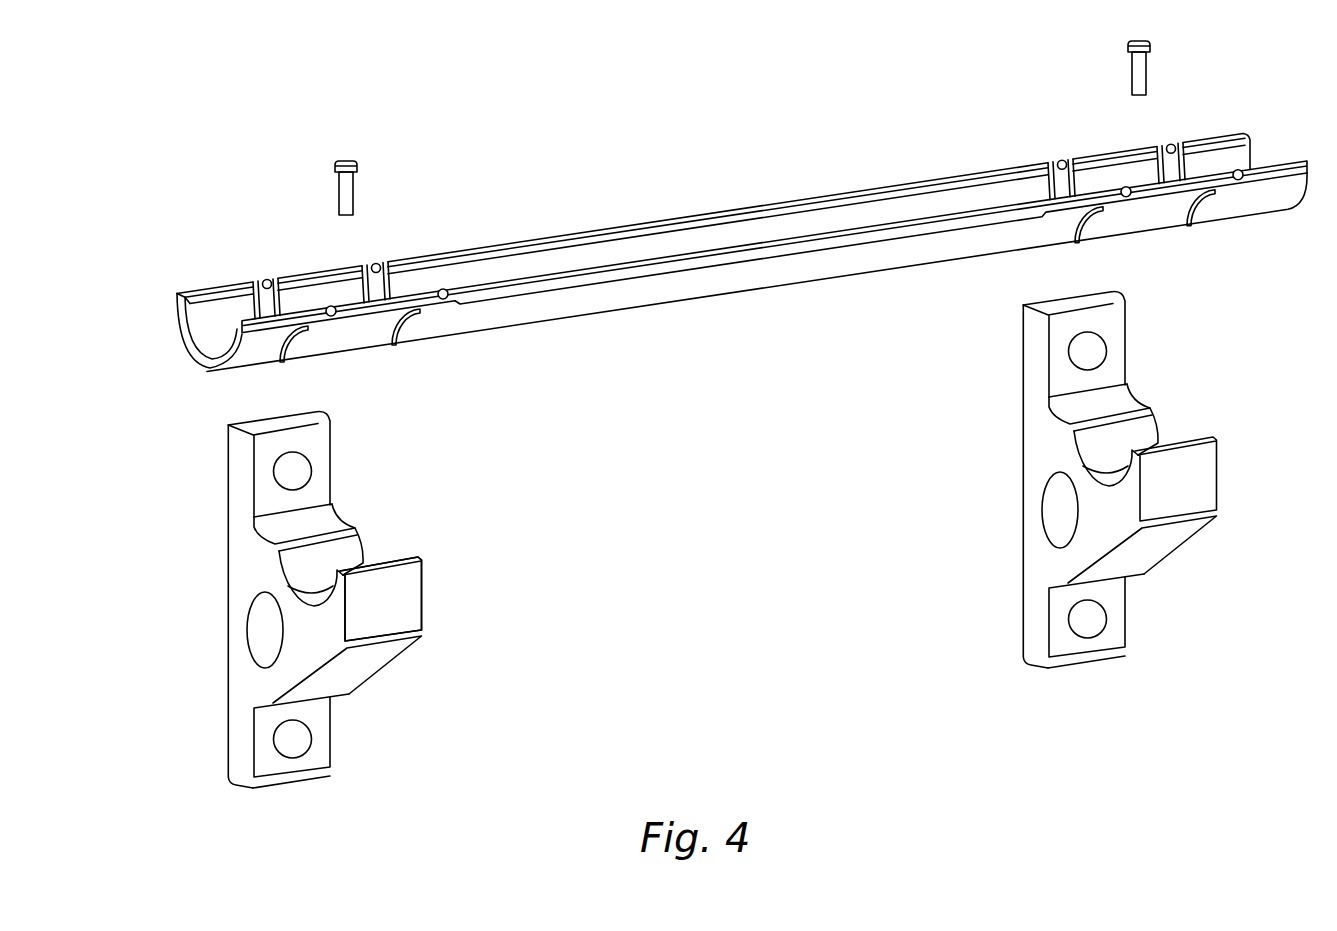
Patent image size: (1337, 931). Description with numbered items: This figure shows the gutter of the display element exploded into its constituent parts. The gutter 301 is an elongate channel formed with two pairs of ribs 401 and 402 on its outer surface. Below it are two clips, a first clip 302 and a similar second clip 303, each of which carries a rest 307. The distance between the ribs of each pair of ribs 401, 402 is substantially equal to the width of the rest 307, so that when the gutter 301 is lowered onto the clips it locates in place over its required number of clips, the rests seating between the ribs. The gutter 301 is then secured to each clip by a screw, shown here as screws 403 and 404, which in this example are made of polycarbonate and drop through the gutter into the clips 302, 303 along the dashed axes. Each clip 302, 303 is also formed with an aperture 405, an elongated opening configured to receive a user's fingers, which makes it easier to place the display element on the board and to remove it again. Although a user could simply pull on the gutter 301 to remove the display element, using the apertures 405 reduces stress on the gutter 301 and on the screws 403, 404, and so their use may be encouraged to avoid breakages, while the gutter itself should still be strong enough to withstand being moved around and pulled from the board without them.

The gutter 301 is at (742, 253).
The clip 302 is at (325, 599).
The clip 303 is at (1115, 623).
The rest 307 is at (413, 596).
The pair of ribs 401 is at (425, 340).
The pair of ribs 402 is at (1220, 221).
The screw 403 is at (346, 567).
The screw 404 is at (1140, 447).
The aperture 405 is at (256, 630).